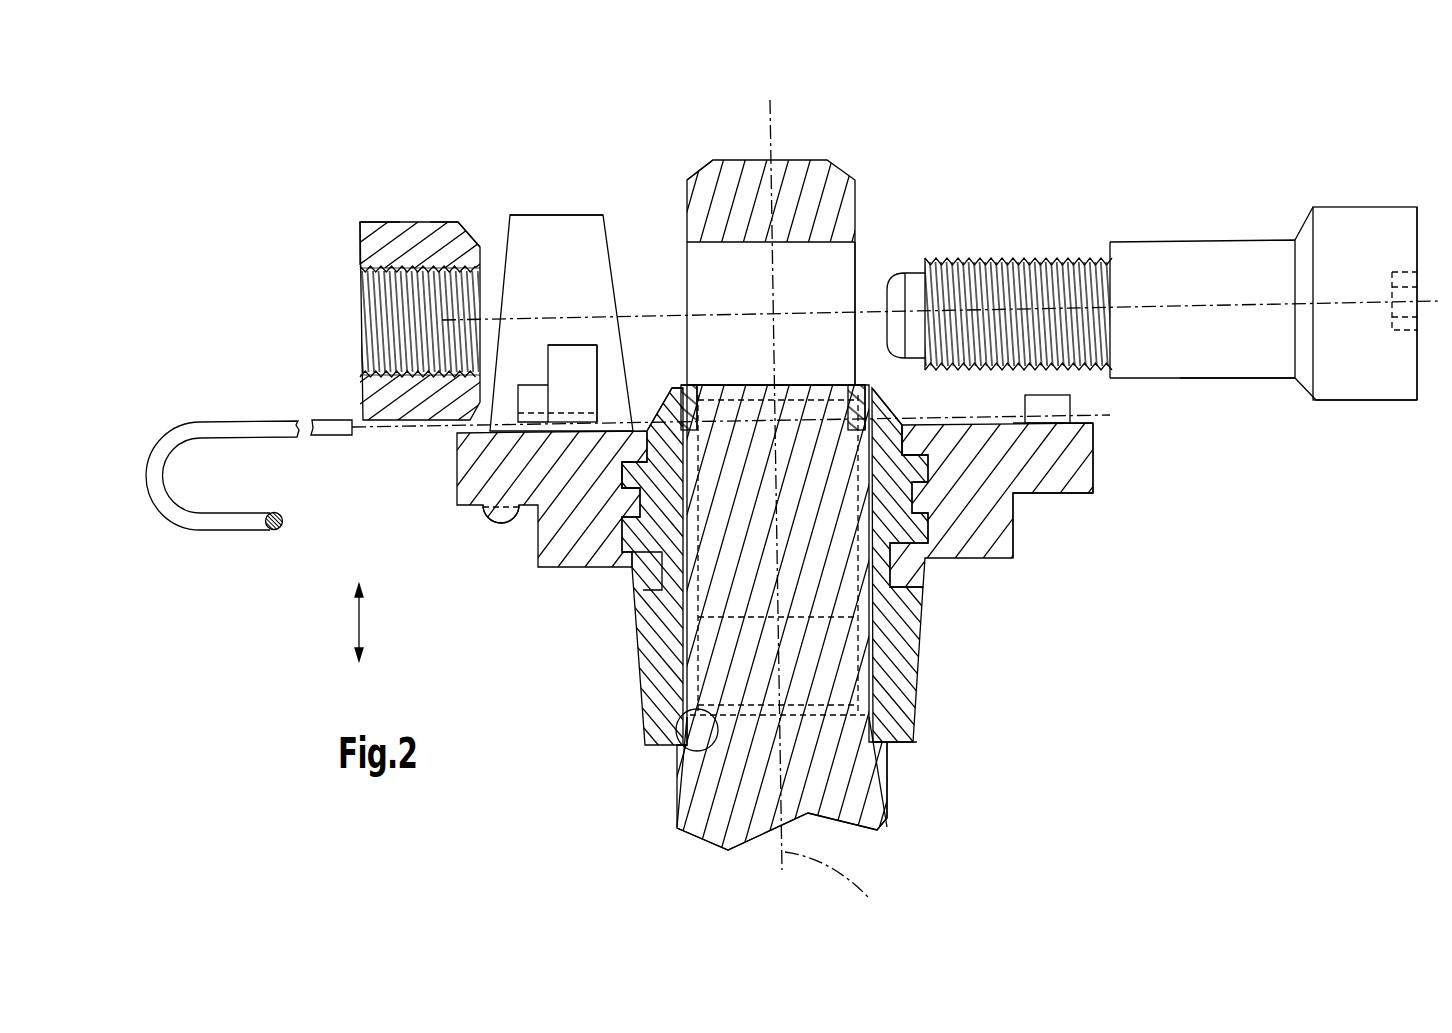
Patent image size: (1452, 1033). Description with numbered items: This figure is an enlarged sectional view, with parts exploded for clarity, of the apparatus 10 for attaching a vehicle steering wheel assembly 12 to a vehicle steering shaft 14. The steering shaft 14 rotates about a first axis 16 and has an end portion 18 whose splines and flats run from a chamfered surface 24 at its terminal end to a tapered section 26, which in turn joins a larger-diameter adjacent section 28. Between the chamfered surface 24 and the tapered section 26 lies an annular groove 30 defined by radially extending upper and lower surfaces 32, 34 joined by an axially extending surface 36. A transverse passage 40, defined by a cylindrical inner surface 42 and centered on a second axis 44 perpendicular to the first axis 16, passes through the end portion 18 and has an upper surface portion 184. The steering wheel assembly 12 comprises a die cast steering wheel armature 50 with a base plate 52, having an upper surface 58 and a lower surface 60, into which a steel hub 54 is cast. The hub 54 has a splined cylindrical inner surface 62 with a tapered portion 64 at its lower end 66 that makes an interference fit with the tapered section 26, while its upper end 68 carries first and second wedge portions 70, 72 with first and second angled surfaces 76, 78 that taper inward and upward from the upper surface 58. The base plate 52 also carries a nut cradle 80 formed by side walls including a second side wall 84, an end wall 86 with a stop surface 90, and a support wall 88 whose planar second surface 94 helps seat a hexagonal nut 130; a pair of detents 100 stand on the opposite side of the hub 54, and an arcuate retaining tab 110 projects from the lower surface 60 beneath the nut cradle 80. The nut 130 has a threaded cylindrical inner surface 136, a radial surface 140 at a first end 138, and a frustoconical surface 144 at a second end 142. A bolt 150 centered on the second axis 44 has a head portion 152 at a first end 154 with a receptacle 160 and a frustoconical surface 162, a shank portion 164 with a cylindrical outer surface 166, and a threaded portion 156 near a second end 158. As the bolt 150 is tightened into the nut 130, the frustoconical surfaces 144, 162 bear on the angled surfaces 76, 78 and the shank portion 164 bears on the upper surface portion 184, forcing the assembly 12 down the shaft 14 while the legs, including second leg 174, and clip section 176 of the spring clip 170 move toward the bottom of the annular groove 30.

The apparatus 10 is at (892, 147).
The vehicle steering wheel assembly 12 is at (654, 531).
The vehicle steering shaft 14 is at (776, 618).
The first axis 16 is at (826, 884).
The end portion 18 is at (784, 160).
The chamfered surface 24 is at (695, 183).
The tapered section 26 is at (900, 742).
The adjacent section 28 is at (883, 795).
The annular groove 30 is at (695, 420).
The upper surface 32 is at (698, 400).
The lower surface 34 is at (830, 415).
The axially extending surface 36 is at (850, 415).
The passage 40 is at (781, 479).
The cylindrical inner surface 42 is at (776, 385).
The second axis 44 is at (1212, 300).
The steering wheel armature 50 is at (783, 500).
The base plate 52 is at (1087, 472).
The hub 54 is at (903, 567).
The upper surface 58 is at (1097, 420).
The lower surface 60 is at (1073, 498).
The cylindrical inner surface 62 is at (702, 705).
The tapered portion 64 is at (686, 745).
The lower end 66 is at (910, 730).
The upper end 68 is at (866, 388).
The first wedge portion 70 is at (668, 388).
The second wedge portion 72 is at (877, 390).
The first angled surface 76 is at (657, 407).
The second angled surface 78 is at (895, 415).
The nut cradle 80 is at (570, 282).
The second side wall 84 is at (576, 235).
The end wall 86 is at (536, 400).
The support wall 88 is at (572, 355).
The stop surface 90 is at (566, 355).
The second surface 94 is at (585, 352).
The detents 100 is at (1055, 402).
The retaining tab 110 is at (501, 512).
The nut 130 is at (397, 269).
The cylindrical inner surface 136 is at (360, 288).
The first end 138 is at (360, 237).
The radial surface 140 is at (360, 243).
The second end 142 is at (478, 235).
The frustoconical surface 144 is at (472, 226).
The bolt 150 is at (1333, 295).
The head portion 152 is at (1347, 390).
The first end 154 is at (1390, 388).
The threaded portion 156 is at (988, 252).
The second end 158 is at (892, 283).
The receptacle 160 is at (1397, 272).
The frustoconical surface 162 is at (1298, 222).
The shank portion 164 is at (1202, 309).
The cylindrical outer surface 166 is at (1210, 378).
The spring clip 170 is at (628, 483).
The second leg 174 is at (250, 430).
The clip section 176 is at (225, 520).
The upper surface portion 184 is at (795, 242).